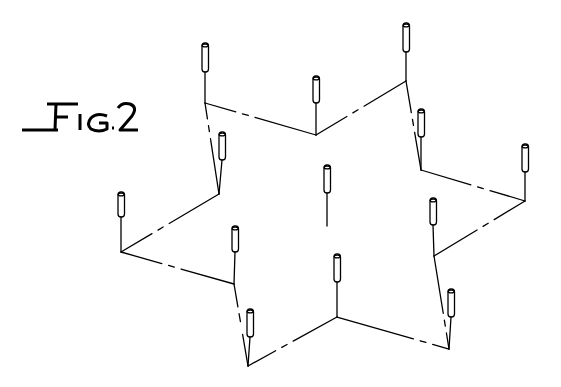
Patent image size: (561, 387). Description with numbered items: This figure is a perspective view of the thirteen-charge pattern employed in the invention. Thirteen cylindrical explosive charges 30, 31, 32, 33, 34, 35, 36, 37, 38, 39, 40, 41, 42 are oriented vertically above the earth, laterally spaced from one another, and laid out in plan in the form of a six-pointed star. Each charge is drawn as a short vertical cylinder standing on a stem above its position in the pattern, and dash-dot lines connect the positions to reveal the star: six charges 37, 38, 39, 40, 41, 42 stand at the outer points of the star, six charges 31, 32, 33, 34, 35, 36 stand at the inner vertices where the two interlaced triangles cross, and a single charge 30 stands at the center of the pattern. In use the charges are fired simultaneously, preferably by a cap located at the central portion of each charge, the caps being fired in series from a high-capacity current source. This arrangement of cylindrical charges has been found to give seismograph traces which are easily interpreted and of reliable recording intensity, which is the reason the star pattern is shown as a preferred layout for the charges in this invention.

The charge 30 is at (330, 183).
The charge 31 is at (424, 125).
The charge 32 is at (436, 203).
The charge 33 is at (340, 262).
The charge 34 is at (238, 237).
The charge 35 is at (225, 145).
The charge 36 is at (319, 97).
The charge 37 is at (409, 42).
The charge 38 is at (528, 166).
The charge 39 is at (454, 303).
The charge 40 is at (268, 318).
The charge 41 is at (125, 204).
The charge 42 is at (208, 65).